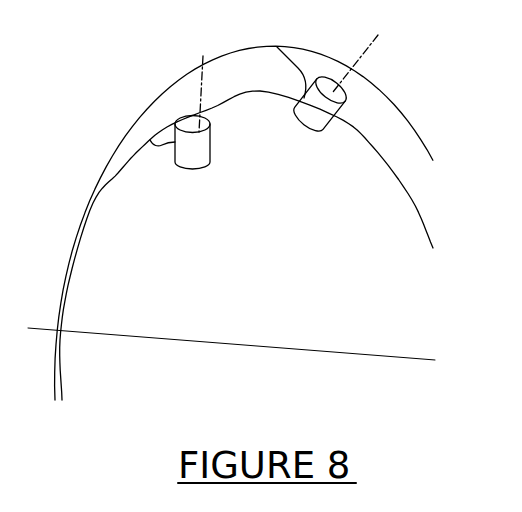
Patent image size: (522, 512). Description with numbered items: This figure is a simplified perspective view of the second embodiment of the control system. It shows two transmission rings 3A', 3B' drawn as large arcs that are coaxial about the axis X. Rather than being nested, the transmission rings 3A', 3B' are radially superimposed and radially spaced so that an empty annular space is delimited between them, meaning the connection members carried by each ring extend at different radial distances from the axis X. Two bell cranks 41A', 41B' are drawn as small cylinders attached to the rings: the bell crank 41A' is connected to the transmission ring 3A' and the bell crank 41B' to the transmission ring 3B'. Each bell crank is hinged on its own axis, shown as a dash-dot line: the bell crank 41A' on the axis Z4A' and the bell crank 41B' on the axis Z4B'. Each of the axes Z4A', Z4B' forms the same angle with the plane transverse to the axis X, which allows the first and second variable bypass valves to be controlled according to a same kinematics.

The transmission ring 3A' is at (244, 216).
The transmission ring 3B' is at (246, 245).
The bell crank 41B' is at (191, 181).
The bell crank 41A' is at (314, 130).
The hinge axis Z4B' is at (207, 81).
The hinge axis Z4A' is at (379, 54).
The axis X is at (243, 353).